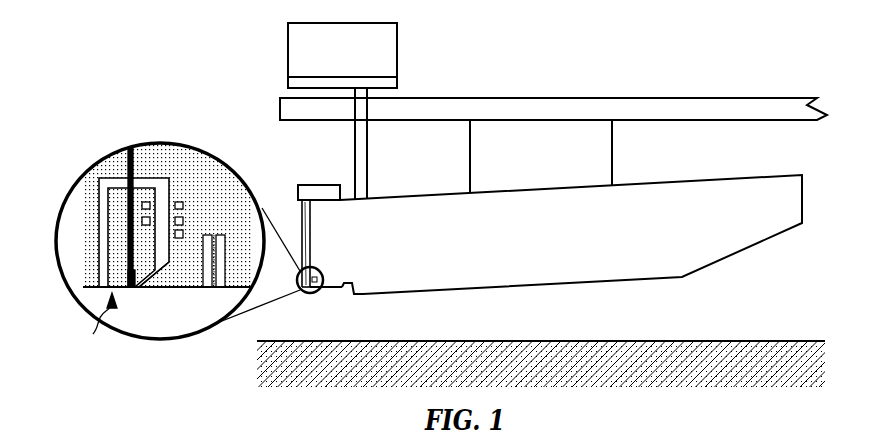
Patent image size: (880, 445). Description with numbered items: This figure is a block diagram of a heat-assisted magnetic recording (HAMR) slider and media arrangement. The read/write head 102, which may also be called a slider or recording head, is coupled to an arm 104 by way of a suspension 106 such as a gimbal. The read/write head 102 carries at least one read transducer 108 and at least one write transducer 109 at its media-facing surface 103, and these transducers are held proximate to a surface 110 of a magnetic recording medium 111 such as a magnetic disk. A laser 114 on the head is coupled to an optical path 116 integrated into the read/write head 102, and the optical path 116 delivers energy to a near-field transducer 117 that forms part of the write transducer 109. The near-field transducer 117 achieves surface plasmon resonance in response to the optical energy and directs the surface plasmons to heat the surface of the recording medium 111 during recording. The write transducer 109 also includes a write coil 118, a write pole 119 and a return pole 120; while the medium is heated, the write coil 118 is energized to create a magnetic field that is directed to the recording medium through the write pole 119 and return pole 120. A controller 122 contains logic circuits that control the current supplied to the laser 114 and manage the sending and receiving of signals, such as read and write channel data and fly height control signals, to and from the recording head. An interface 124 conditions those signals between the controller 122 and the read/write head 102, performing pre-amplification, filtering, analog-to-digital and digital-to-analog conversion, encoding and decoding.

The read/write head 102 is at (741, 178).
The media-facing surface 103 is at (350, 295).
The arm 104 is at (722, 106).
The suspension 106 is at (612, 172).
The read transducer 108 is at (195, 278).
The write transducer 109 is at (98, 322).
The surface 110 is at (811, 340).
The magnetic recording medium 111 is at (688, 383).
The laser 114 is at (311, 185).
The optical path 116 is at (128, 170).
The near-field transducer 117 is at (128, 289).
The write coil 118 is at (180, 198).
The write pole 119 is at (145, 286).
The return pole 120 is at (98, 270).
The controller 122 is at (397, 53).
The interface 124 is at (397, 83).